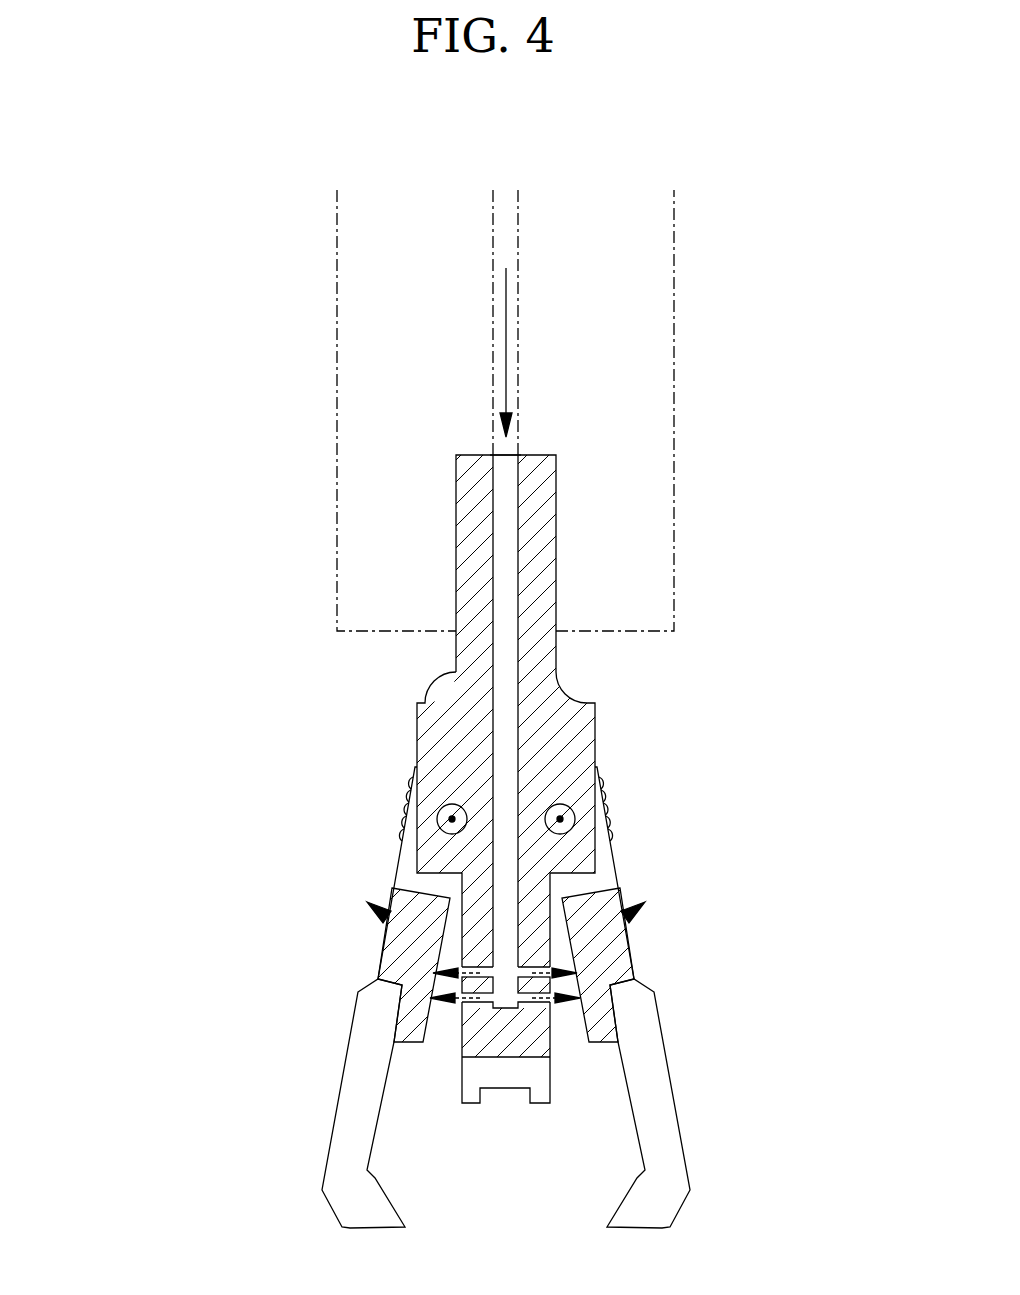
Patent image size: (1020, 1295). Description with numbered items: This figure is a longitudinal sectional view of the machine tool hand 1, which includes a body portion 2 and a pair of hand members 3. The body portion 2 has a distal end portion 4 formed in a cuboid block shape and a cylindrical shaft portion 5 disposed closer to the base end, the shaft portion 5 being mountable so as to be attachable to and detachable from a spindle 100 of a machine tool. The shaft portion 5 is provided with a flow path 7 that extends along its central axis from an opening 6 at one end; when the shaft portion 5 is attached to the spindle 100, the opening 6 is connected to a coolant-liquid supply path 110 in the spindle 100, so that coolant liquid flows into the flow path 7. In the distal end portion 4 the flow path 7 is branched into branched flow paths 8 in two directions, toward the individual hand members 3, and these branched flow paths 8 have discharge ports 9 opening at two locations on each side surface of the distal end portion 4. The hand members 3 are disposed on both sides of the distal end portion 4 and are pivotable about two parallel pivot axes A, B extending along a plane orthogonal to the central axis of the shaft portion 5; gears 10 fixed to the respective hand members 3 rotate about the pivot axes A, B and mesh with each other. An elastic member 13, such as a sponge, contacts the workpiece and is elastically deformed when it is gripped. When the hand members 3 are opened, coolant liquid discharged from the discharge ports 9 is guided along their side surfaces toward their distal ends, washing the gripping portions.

The machine tool hand 1 is at (203, 730).
The body portion 2 is at (403, 703).
The hand members 3 is at (350, 1044).
The distal end portion 4 is at (550, 880).
The shaft portion 5 is at (456, 522).
The opening 6 is at (507, 457).
The flow path 7 is at (510, 538).
The branched flow paths 8 is at (480, 974).
The discharge ports 9 is at (436, 973).
The gears 10 is at (400, 796).
The elastic member 13 is at (497, 1090).
The spindle 100 is at (337, 333).
The coolant-liquid supply path 110 is at (506, 256).
The pivot axis A is at (437, 822).
The pivot axis B is at (572, 826).